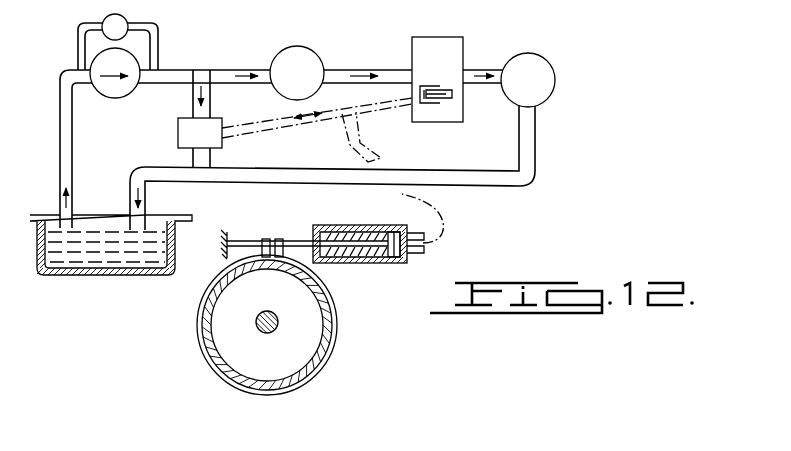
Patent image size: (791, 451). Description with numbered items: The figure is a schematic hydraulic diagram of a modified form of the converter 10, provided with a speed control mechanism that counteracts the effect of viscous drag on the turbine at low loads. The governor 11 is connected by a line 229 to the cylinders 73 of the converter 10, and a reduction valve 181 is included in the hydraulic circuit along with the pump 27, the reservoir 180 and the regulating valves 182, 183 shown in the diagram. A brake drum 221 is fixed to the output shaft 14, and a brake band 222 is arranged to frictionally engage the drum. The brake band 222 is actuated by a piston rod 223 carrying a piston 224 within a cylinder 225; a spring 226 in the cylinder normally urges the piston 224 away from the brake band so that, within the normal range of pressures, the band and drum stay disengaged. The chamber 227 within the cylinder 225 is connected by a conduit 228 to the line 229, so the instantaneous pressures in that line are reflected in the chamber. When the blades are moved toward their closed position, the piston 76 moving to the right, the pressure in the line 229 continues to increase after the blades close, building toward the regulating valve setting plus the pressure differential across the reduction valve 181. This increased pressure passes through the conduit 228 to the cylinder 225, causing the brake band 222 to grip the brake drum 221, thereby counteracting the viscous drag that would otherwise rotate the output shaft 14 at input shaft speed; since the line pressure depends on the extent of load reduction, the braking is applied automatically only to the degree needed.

The converter 10 is at (467, 46).
The governor 11 is at (177, 130).
The output shaft 14 is at (265, 333).
The pump 27 is at (118, 97).
The cylinders 73 is at (425, 112).
The piston 76 is at (440, 101).
The reservoir tank 180 is at (107, 264).
The reduction valve 181 is at (320, 62).
The pressure regulator 182 is at (128, 23).
The pressure regulator 183 is at (552, 90).
The brake drum 221 is at (312, 367).
The brake band 222 is at (337, 325).
The piston rod 223 is at (300, 226).
The piston 224 is at (391, 232).
The cylinder 225 is at (336, 226).
The spring 226 is at (354, 261).
The chamber 227 is at (407, 258).
The conduit 228 is at (358, 158).
The line 229 is at (247, 130).